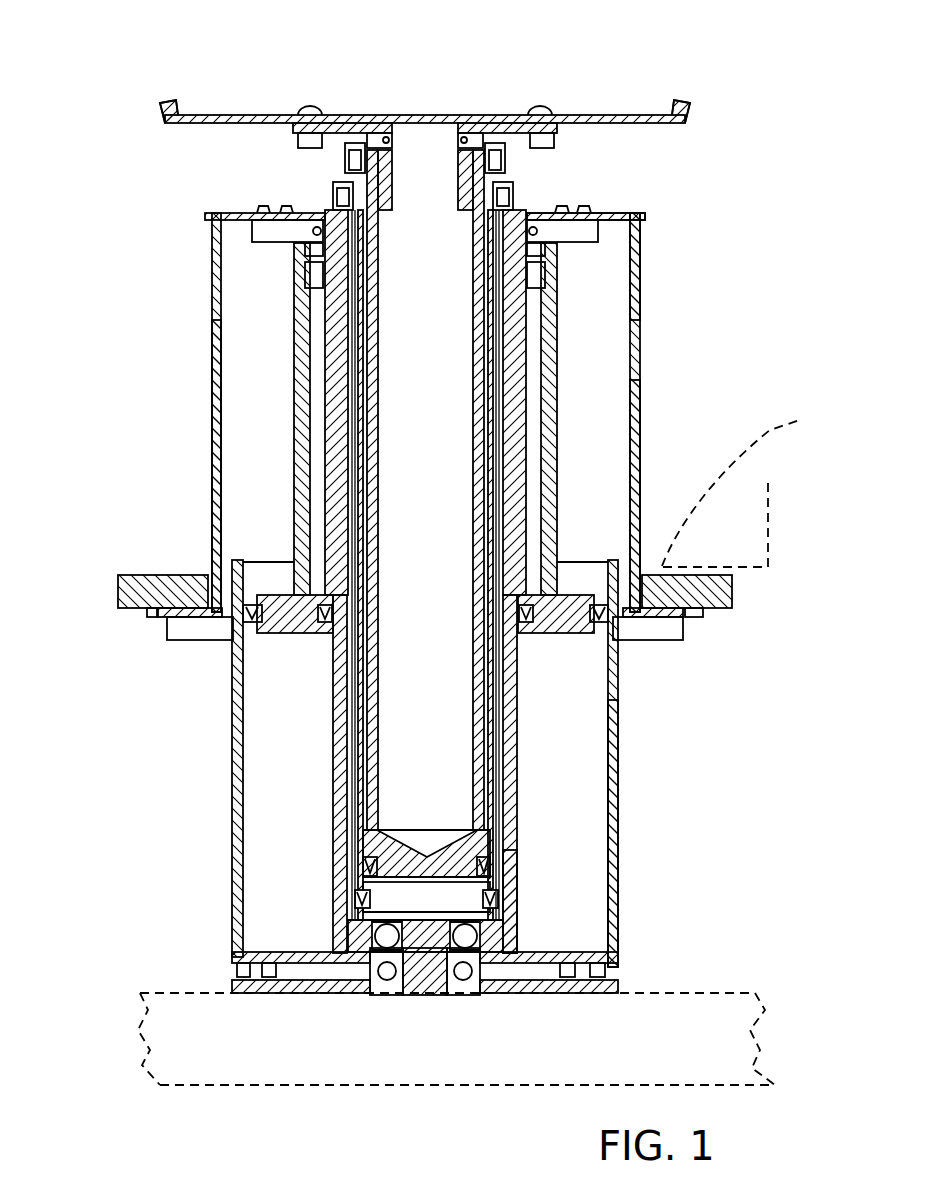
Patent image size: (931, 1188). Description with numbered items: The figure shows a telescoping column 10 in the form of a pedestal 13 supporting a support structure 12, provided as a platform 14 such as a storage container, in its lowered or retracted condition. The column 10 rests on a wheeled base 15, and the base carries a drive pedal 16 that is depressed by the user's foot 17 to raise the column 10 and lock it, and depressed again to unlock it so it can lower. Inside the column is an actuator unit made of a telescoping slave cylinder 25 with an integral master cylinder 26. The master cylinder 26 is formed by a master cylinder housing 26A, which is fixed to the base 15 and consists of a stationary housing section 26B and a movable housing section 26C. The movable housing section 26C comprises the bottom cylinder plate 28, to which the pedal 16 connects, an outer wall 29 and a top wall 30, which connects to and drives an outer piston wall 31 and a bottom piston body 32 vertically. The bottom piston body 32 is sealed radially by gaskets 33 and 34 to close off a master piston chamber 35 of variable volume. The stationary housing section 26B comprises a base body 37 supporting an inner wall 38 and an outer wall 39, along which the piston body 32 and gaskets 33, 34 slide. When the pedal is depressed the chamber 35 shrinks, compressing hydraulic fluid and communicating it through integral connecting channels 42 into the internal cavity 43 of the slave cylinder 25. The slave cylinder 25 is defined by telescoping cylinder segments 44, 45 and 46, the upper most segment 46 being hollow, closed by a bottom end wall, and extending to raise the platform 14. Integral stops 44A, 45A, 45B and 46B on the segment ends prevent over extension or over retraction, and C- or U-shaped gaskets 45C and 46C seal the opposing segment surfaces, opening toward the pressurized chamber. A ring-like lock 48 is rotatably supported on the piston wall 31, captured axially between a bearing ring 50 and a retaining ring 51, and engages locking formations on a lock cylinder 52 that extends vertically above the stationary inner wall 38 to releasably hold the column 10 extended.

The telescoping column 10 is at (640, 248).
The support structure 12 is at (735, 48).
The pedestal 13 is at (92, 80).
The platform 14 is at (440, 114).
The wheeled base 15 is at (215, 1050).
The drive pedal 16 is at (138, 575).
The user's foot 17 is at (743, 479).
The slave cylinder 25 is at (548, 172).
The master cylinder 26 is at (645, 372).
The master cylinder housing 26A is at (636, 330).
The stationary housing section 26B is at (612, 866).
The movable housing section 26C is at (636, 315).
The bottom cylinder plate 28 is at (690, 612).
The outer wall 29 is at (638, 427).
The top wall 30 is at (598, 214).
The outer piston wall 31 is at (556, 467).
The bottom piston body 32 is at (570, 630).
The gasket 33 is at (330, 628).
The gasket 34 is at (252, 621).
The master piston chamber 35 is at (583, 765).
The base body 37 is at (580, 993).
The inner wall 38 is at (512, 900).
The outer wall 39 is at (612, 815).
The connecting channel 42 is at (322, 968).
The internal cavity 43 is at (425, 913).
The telescoping cylinder segment 44 is at (345, 432).
The integral stop 44A is at (333, 200).
The telescoping cylinder segment 45 is at (362, 365).
The integral stop 45A is at (358, 893).
The integral stop 45B is at (350, 167).
The gasket 45C is at (358, 906).
The upper most segment 46 is at (372, 325).
The integral stop 46B is at (366, 860).
The gasket 46C is at (365, 879).
The ring-like lock 48 is at (305, 253).
The bearing ring 50 is at (305, 275).
The retaining ring 51 is at (305, 238).
The lock cylinder 52 is at (340, 498).